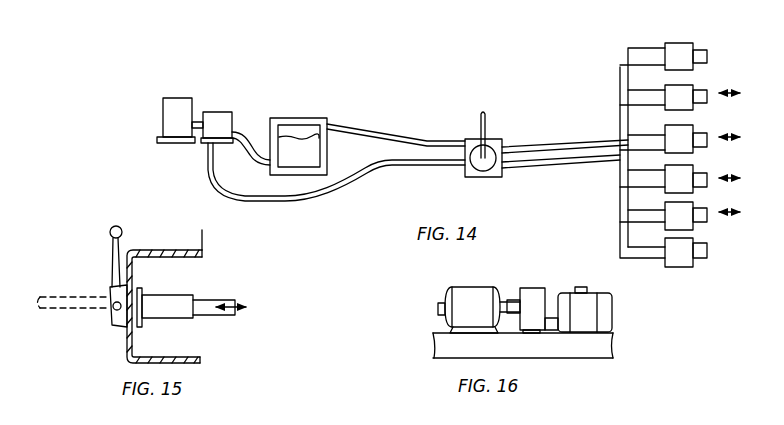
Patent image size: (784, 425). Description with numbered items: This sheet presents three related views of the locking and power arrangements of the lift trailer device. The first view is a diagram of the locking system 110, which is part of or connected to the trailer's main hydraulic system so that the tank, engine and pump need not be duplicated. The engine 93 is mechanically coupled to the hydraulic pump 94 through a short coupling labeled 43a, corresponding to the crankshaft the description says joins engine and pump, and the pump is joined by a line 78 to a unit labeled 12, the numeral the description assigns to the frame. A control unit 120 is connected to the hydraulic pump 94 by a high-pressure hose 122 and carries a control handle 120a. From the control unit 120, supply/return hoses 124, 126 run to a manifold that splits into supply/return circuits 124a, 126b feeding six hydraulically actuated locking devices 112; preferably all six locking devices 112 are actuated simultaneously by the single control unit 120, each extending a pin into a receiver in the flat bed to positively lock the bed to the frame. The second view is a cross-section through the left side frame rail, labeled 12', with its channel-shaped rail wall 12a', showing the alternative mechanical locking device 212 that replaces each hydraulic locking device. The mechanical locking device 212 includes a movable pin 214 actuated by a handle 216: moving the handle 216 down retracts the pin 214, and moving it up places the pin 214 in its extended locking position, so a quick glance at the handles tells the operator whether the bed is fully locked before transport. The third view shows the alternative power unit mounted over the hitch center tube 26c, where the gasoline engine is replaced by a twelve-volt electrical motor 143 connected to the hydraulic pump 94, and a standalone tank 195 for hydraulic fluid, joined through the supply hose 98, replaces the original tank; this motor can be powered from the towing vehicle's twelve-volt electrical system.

In FIG. 14, the engine 93 is at (173, 103).
In FIG. 14, the connector 43a is at (198, 122).
In FIG. 14, the hydraulic pump 94 is at (218, 117).
In FIG. 16, the hydraulic pump 94 is at (533, 288).
In FIG. 14, the hydraulic line 78 is at (245, 141).
In FIG. 14, the frame 12 is at (298, 128).
In FIG. 14, the locking system 110 is at (352, 83).
In FIG. 14, the high-pressure hose 122 is at (440, 166).
In FIG. 14, the hydraulic control unit 120 is at (467, 140).
In FIG. 14, the valve handle 120a is at (487, 113).
In FIG. 14, the supply/return hose 124 is at (553, 168).
In FIG. 14, the supply/return circuit 124a is at (620, 210).
In FIG. 14, the supply/return hose 126 is at (565, 142).
In FIG. 14, the pressure manifold 126b is at (622, 56).
In FIG. 14, the hydraulically actuated locking device 112 is at (680, 43).
In FIG. 15, the mechanical locking device 212 is at (167, 303).
In FIG. 15, the movable pin 214 is at (215, 315).
In FIG. 15, the handle 216 is at (110, 256).
In FIG. 15, the frame member 12' is at (87, 348).
In FIG. 15, the channel bracket 12a' is at (125, 309).
In FIG. 16, the motor 143 is at (462, 295).
In FIG. 16, the supply hose 98 is at (548, 320).
In FIG. 16, the standalone tank 195 is at (605, 310).
In FIG. 16, the center tube 26c is at (545, 349).